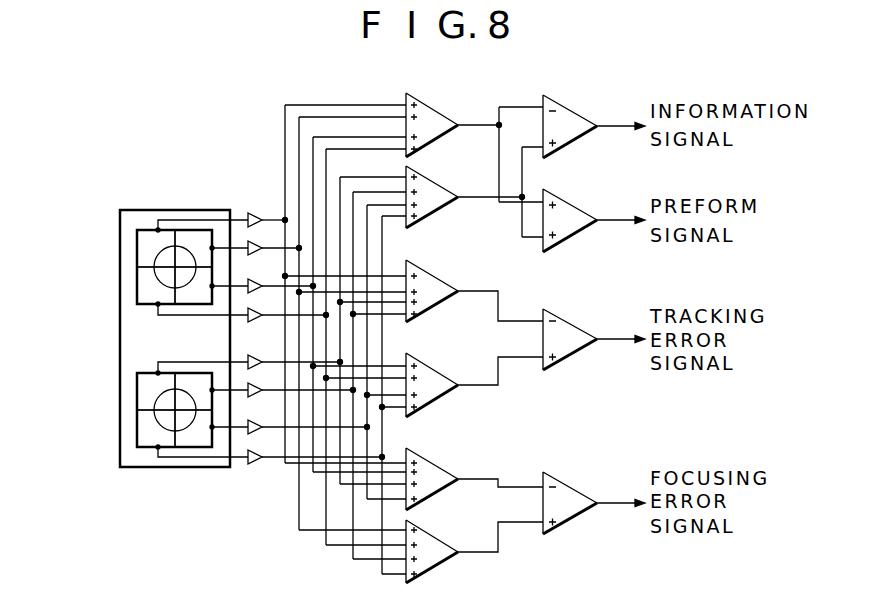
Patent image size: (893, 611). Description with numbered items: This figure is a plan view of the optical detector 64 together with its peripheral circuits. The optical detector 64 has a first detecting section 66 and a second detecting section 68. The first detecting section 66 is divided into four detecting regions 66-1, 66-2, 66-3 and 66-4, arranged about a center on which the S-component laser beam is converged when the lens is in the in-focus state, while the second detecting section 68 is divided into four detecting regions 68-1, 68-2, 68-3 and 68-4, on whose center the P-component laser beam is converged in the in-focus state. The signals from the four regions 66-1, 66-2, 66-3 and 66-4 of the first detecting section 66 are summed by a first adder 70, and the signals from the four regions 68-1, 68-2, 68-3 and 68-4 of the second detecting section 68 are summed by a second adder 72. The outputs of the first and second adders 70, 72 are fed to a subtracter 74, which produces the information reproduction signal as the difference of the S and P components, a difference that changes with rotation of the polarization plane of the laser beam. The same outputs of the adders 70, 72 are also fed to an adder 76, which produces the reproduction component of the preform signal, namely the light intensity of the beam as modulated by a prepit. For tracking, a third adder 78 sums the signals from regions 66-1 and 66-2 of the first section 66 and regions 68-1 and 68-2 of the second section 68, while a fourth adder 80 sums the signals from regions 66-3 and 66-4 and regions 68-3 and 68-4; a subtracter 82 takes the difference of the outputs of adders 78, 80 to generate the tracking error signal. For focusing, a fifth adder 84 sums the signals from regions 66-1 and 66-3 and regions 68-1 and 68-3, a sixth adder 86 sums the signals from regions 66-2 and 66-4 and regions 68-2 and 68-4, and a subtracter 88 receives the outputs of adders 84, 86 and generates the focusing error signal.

The optical detector 64 is at (106, 210).
The first detecting section 66 is at (137, 248).
The first detecting region of first section 66-1 is at (145, 238).
The second detecting region of first section 66-2 is at (197, 237).
The third detecting region of first section 66-3 is at (145, 285).
The fourth detecting region of first section 66-4 is at (197, 292).
The second detecting section 68 is at (137, 418).
The first detecting region of second section 68-1 is at (143, 388).
The second detecting region of second section 68-2 is at (197, 383).
The third detecting region of second section 68-3 is at (152, 432).
The fourth detecting region of second section 68-4 is at (197, 437).
The first adder 70 is at (432, 108).
The second adder 72 is at (428, 184).
The subtracter 74 is at (566, 108).
The adder 76 is at (570, 208).
The third adder 78 is at (428, 272).
The fourth adder 80 is at (428, 367).
The subtracter 82 is at (572, 322).
The fifth adder 84 is at (428, 462).
The sixth adder 86 is at (428, 532).
The subtracter 88 is at (572, 486).